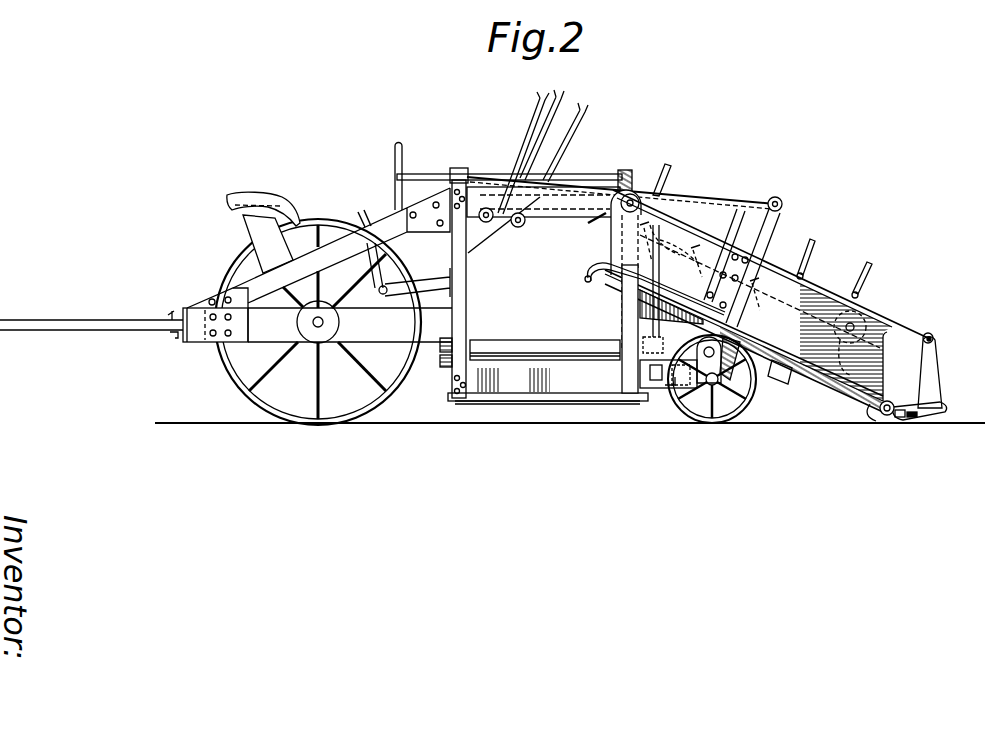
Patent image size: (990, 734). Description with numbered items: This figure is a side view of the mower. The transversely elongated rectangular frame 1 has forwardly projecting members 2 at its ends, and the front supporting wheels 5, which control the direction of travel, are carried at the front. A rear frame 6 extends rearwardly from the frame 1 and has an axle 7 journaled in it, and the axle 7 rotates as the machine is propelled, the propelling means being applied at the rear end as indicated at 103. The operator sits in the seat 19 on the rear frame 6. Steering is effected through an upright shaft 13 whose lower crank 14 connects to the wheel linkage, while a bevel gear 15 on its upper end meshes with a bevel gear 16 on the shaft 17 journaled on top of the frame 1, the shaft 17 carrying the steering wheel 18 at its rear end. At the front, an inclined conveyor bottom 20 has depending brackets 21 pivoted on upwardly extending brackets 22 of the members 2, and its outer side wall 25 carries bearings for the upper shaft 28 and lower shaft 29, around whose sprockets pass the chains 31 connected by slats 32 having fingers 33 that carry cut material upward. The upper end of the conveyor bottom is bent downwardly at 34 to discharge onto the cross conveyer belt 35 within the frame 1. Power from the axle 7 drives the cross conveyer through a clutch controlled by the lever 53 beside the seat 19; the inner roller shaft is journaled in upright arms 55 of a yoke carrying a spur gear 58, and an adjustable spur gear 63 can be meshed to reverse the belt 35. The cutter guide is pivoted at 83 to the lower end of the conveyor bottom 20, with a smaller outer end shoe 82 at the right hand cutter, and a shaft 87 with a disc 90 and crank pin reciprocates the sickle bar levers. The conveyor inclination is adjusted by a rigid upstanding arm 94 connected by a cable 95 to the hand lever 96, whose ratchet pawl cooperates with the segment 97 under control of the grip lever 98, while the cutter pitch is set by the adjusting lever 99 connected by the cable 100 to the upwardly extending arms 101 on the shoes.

The frame 1 is at (463, 313).
The forwardly projecting members 2 is at (649, 397).
The front supporting wheels 5 is at (746, 416).
The rear frame 6 is at (350, 325).
The axle 7 is at (312, 322).
The upright shaft 13 is at (654, 322).
The crank 14 is at (672, 388).
The bevel gear 15 is at (668, 184).
The bevel gear 16 is at (630, 170).
The shaft 17 is at (424, 174).
The steering wheel 18 is at (395, 150).
The seat 19 is at (226, 203).
The conveyor bottoms 20 is at (822, 376).
The depending brackets 21 is at (744, 320).
The upwardly extending brackets 22 is at (690, 350).
The outer side walls 25 is at (874, 356).
The upper shaft 28 is at (619, 212).
The lower shaft 29 is at (921, 334).
The chains 31 is at (726, 258).
The slats 32 is at (804, 268).
The fingers 33 is at (860, 289).
The downwardly bent upper ends 34 is at (589, 271).
The belt 35 is at (523, 341).
The lever 53 is at (395, 276).
The upright arms 55 is at (452, 399).
The spur gear 58 is at (445, 366).
The spur gear 63 is at (446, 339).
The outer end shoe 82 is at (940, 415).
The pivots 83 is at (889, 399).
The shaft 87 is at (770, 380).
The disc 90 is at (783, 386).
The upstanding arm 94 is at (778, 211).
The cable 95 is at (730, 197).
The hand lever 96 is at (526, 130).
The segment 97 is at (486, 182).
The grip lever 98 is at (551, 112).
The adjusting lever 99 is at (570, 132).
The cable 100 is at (692, 252).
The arms 101 is at (930, 370).
The propelling means connection 103 is at (160, 305).